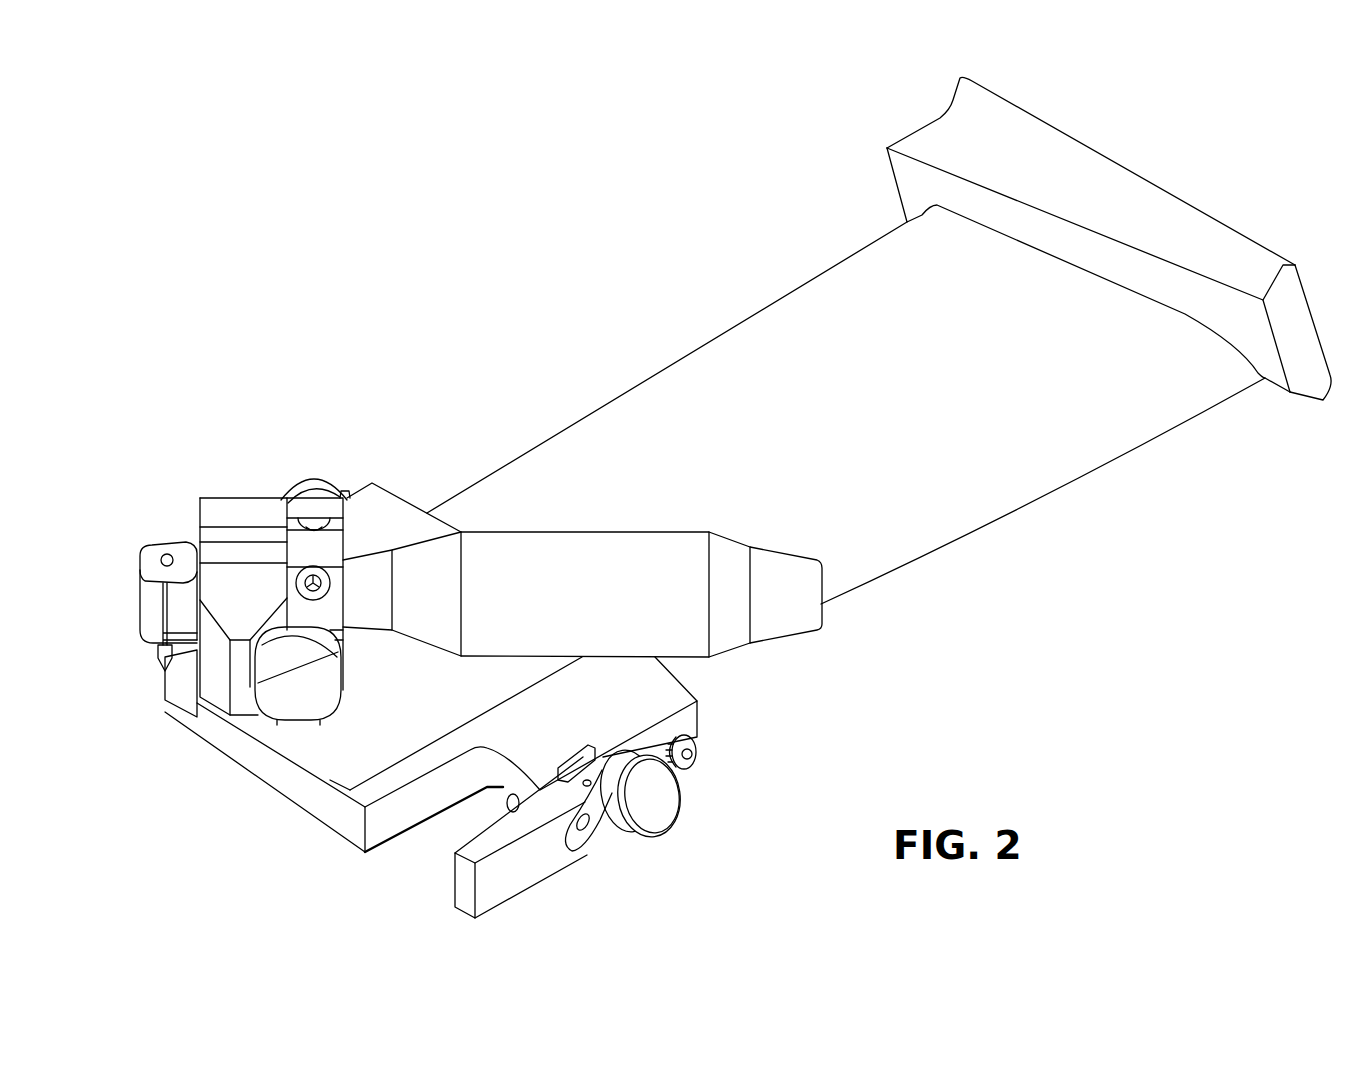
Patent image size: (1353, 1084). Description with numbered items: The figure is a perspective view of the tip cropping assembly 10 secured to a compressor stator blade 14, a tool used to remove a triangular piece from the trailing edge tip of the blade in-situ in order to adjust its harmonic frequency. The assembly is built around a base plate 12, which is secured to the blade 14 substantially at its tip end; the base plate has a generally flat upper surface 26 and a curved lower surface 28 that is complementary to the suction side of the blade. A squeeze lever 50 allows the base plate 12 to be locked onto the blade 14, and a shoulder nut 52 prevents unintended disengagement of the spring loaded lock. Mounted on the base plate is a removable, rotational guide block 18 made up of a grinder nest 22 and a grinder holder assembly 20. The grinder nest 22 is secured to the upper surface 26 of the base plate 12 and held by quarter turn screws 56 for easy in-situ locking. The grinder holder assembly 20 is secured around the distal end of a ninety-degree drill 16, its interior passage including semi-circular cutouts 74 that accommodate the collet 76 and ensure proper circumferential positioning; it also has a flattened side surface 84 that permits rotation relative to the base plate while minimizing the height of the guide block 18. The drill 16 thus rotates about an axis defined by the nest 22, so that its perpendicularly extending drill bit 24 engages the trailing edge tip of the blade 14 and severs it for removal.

The tip cropping assembly 10 is at (391, 433).
The base plate 12 is at (312, 754).
The compressor stator blade 14 is at (997, 450).
The 90° drill 16 is at (577, 570).
The guide block 18 is at (230, 466).
The grinder holder assembly 20 is at (330, 608).
The grinder nest 22 is at (230, 610).
The drill bit 24 is at (160, 665).
The upper surface 26 is at (377, 757).
The curved lower surface 28 is at (307, 798).
The squeeze lever 50 is at (505, 877).
The shoulder nut 52 is at (643, 807).
The quarter turn screws 56 is at (273, 708).
The semi-circular cutouts 74 is at (167, 550).
The collet 76 is at (150, 603).
The flattened side surface 84 is at (320, 548).